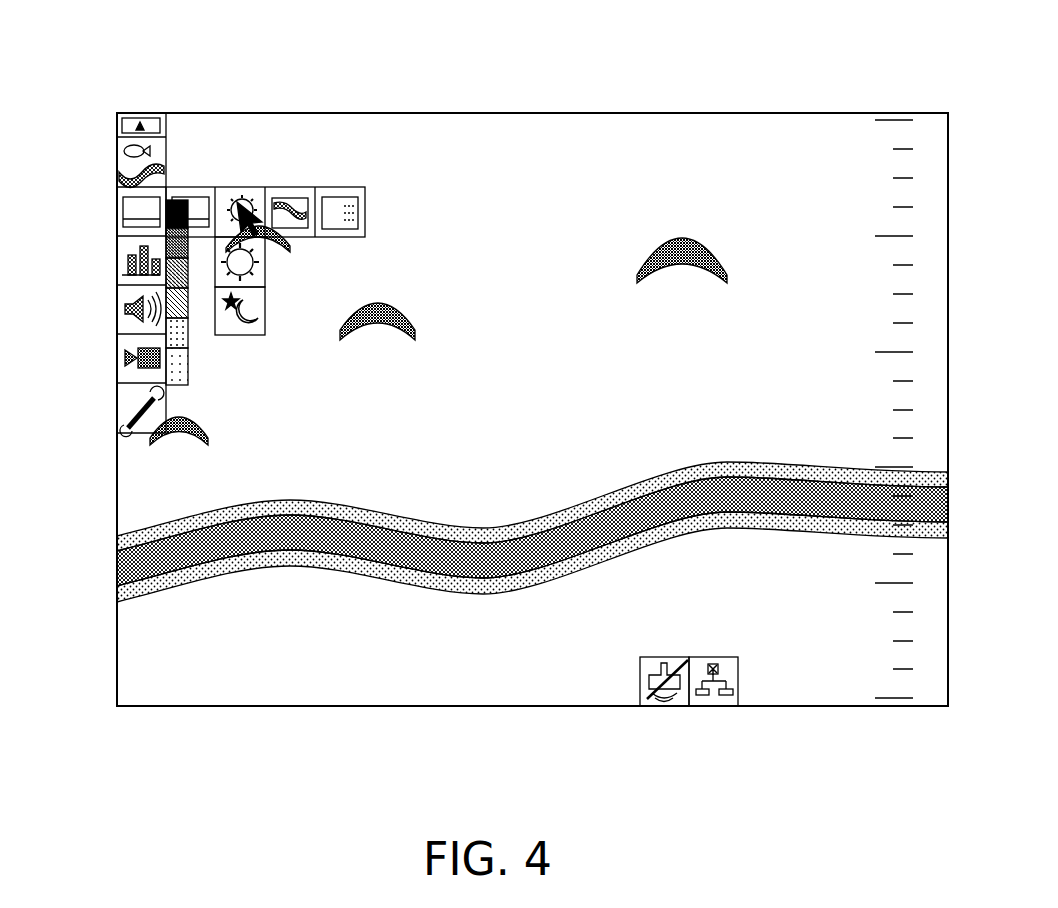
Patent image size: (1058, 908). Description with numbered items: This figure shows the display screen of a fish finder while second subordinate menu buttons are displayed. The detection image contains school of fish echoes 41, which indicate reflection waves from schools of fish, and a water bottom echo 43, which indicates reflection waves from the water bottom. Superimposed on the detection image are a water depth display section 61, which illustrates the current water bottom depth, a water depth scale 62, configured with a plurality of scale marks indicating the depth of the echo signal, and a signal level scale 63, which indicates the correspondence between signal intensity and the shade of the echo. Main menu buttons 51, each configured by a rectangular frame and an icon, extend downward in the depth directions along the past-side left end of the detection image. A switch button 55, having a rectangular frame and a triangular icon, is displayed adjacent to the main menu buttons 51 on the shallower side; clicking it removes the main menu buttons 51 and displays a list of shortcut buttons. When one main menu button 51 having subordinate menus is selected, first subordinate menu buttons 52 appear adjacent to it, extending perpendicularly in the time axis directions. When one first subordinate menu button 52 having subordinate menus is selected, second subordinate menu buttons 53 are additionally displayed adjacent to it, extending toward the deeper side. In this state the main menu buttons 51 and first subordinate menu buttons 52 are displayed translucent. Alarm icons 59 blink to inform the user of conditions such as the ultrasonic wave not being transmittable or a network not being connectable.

The school of fish echo 41 is at (282, 240).
The water bottom echo 43 is at (636, 488).
The main menu button 51 is at (118, 168).
The first subordinate menu button 52 is at (191, 187).
The second subordinate menu button 53 is at (268, 268).
The switch button 55 is at (119, 131).
The alarm icon 59 is at (655, 660).
The water depth display section 61 is at (276, 683).
The water depth scale 62 is at (903, 118).
The signal level scale 63 is at (188, 352).